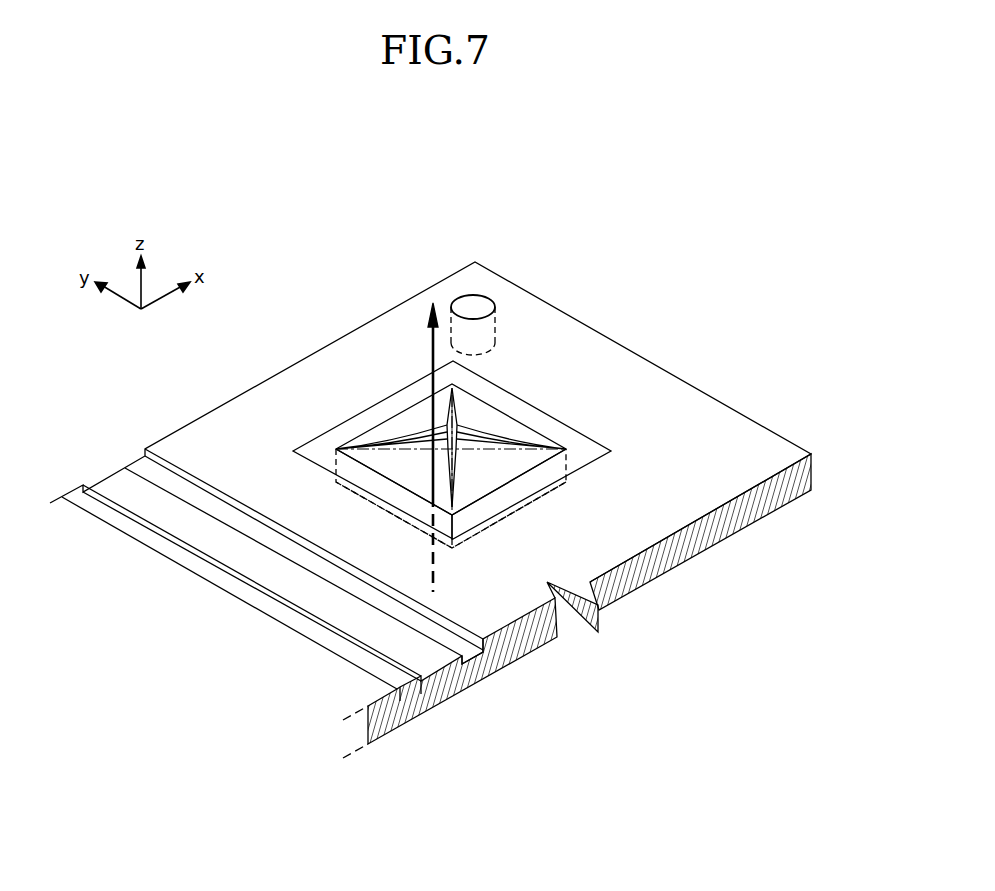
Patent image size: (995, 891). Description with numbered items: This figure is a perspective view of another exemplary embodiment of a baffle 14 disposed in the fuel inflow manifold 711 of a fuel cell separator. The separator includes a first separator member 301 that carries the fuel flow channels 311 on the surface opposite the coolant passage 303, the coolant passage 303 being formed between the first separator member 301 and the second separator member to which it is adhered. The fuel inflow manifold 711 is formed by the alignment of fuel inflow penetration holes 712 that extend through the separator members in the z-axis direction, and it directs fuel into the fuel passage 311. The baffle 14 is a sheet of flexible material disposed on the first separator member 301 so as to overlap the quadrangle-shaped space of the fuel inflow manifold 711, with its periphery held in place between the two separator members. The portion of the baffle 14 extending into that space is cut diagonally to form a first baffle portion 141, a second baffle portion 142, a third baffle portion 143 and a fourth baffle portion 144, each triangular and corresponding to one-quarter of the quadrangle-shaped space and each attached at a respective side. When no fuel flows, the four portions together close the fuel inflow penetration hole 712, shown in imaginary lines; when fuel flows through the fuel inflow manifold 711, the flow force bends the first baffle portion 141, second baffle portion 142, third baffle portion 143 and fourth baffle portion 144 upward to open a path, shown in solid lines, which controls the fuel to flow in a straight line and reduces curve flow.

The baffle 14 is at (563, 225).
The first baffle portion 141 is at (440, 400).
The second baffle portion 142 is at (496, 468).
The third baffle portion 143 is at (505, 488).
The fourth baffle portion 144 is at (497, 427).
The first separator member 301 is at (698, 441).
The coolant passage 303 is at (400, 681).
The fuel flow channels 311 is at (463, 678).
The fuel inflow manifold 711 is at (435, 568).
The fuel inflow penetration hole 712 is at (567, 450).